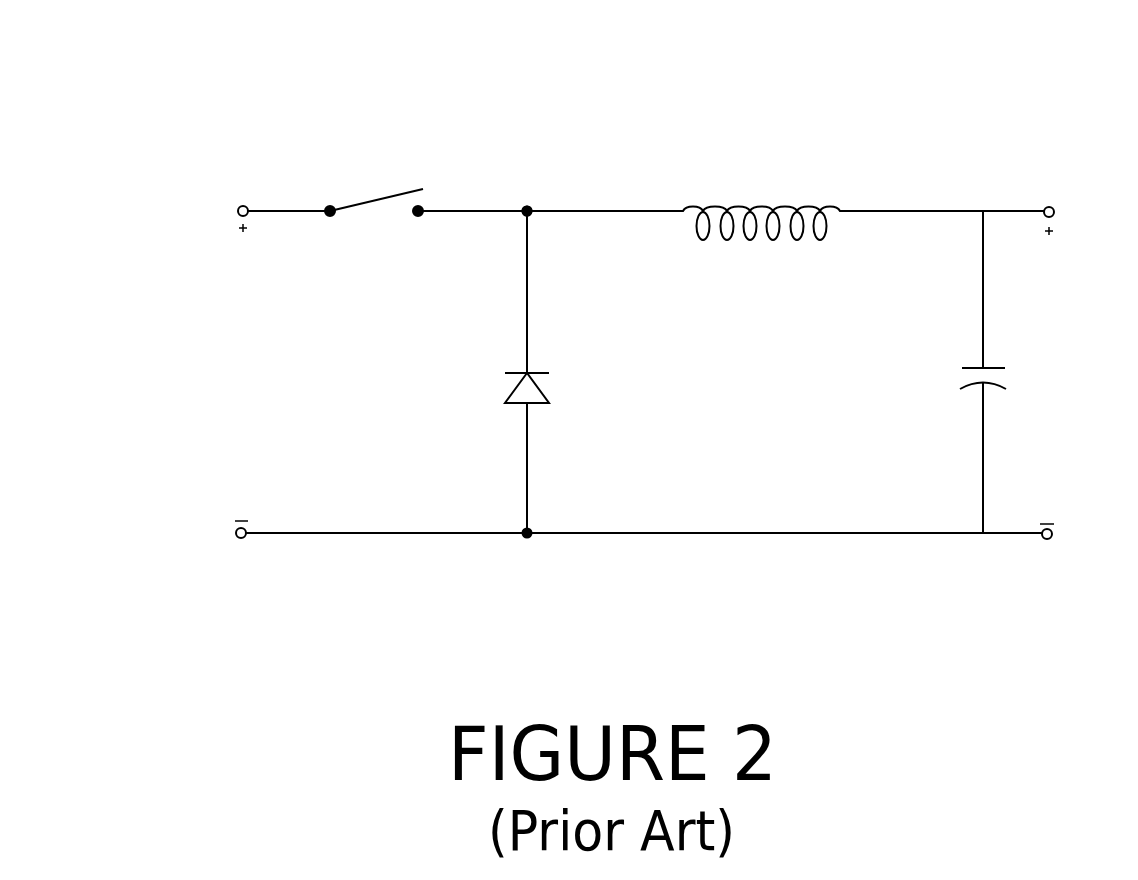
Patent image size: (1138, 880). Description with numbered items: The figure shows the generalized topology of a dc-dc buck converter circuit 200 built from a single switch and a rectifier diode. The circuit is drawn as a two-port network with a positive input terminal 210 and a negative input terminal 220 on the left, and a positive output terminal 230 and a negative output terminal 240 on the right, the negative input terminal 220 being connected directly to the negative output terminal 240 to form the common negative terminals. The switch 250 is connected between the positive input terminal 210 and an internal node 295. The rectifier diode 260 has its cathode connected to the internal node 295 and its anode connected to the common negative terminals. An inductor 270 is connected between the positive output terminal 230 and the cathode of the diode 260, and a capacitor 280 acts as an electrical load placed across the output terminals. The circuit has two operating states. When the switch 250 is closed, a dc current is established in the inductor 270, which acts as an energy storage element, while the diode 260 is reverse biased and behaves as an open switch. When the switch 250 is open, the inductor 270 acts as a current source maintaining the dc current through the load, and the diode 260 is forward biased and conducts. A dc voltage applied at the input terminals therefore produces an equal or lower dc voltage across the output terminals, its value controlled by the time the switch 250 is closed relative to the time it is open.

The dc-dc buck converter circuit 200 is at (88, 85).
The positive input terminal 210 is at (242, 205).
The negative input terminal 220 is at (239, 539).
The positive output terminal 230 is at (1052, 207).
The negative output terminal 240 is at (1050, 540).
The switch 250 is at (395, 190).
The rectifier diode 260 is at (540, 405).
The inductor 270 is at (750, 200).
The capacitor 280 is at (1012, 372).
The internal node 295 is at (529, 207).